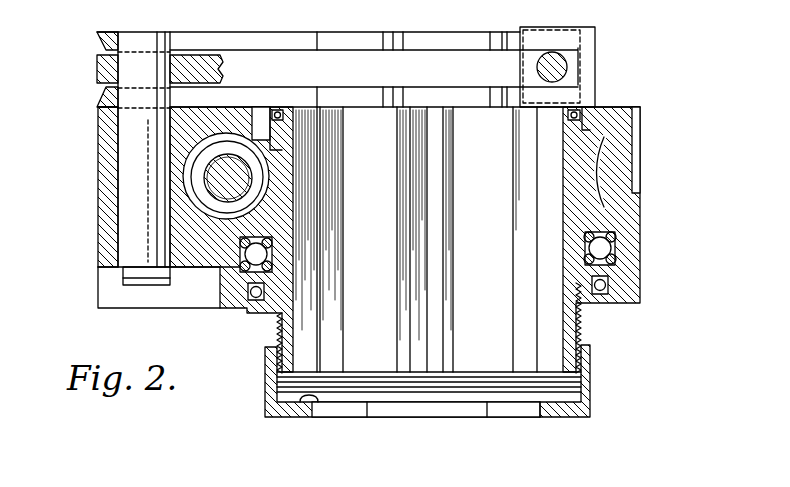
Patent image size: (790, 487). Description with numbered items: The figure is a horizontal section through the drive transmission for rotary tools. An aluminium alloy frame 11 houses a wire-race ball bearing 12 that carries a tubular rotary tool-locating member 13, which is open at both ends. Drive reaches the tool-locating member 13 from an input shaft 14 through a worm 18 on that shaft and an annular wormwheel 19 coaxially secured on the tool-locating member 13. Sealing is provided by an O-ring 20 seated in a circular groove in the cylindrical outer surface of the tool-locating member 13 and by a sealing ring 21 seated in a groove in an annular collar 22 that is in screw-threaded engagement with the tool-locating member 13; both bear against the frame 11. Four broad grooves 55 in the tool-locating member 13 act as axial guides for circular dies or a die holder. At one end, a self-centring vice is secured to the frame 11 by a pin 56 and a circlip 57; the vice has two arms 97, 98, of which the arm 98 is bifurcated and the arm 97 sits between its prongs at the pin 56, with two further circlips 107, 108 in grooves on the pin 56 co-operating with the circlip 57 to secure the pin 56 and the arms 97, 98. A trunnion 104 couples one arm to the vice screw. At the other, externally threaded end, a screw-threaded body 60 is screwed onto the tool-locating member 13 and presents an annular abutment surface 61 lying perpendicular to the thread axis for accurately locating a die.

The frame 11 is at (180, 218).
The wire-race ball bearing 12 is at (238, 272).
The tubular rotary tool-locating member 13 is at (570, 320).
The input shaft 14 is at (210, 171).
The worm 18 is at (192, 152).
The annular wormwheel 19 is at (265, 142).
The O-ring 20 is at (279, 111).
The sealing ring 21 is at (256, 302).
The annular collar 22 is at (266, 347).
The broad grooves 55 is at (387, 308).
The pin 56 is at (128, 278).
The circlip 57 is at (112, 271).
The screw-threaded body 60 is at (584, 408).
The annular surface 61 is at (306, 400).
The arm 97 is at (97, 63).
The arm 98 is at (586, 50).
The trunnion 104 is at (527, 60).
The circlip 107 is at (115, 50).
The circlip 108 is at (115, 90).